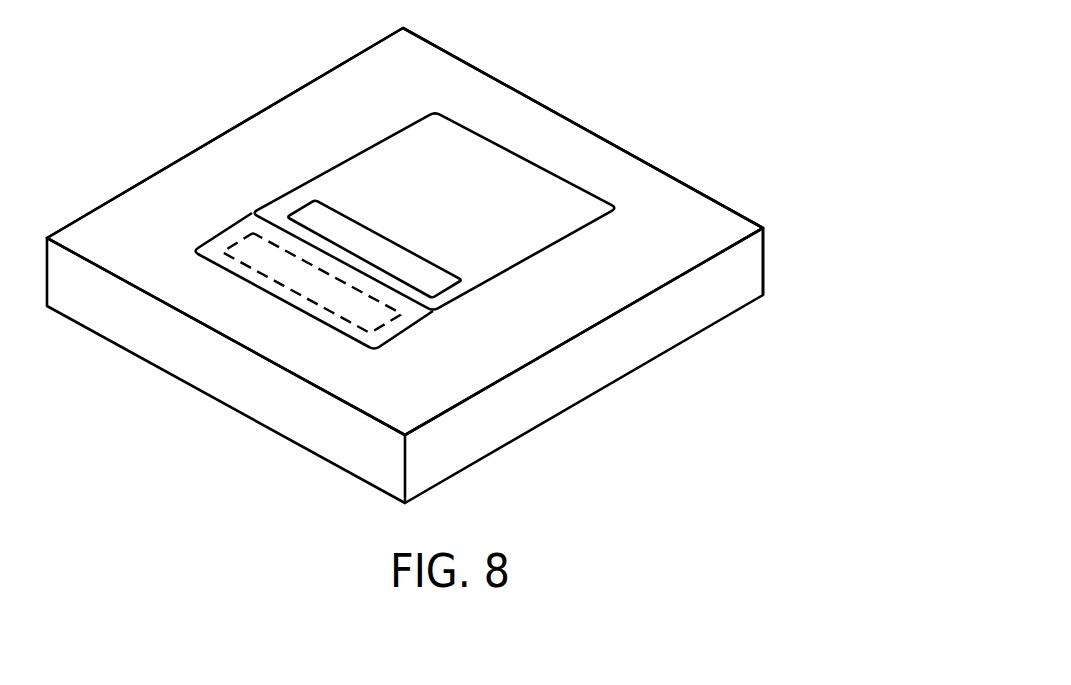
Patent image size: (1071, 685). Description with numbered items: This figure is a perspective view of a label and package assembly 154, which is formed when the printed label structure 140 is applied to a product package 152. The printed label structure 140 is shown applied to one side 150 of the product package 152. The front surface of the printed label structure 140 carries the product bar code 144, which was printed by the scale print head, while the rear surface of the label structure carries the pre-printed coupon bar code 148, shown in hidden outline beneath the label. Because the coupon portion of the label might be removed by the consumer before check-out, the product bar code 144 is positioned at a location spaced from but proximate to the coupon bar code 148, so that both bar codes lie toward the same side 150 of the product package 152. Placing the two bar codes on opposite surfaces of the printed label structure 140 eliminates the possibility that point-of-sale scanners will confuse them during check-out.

The printed label structure 140 is at (435, 167).
The product bar code 144 is at (385, 245).
The coupon bar code 148 is at (242, 245).
The side of product package 150 is at (727, 217).
The product package 152 is at (830, 261).
The label and package assembly 154 is at (441, 256).